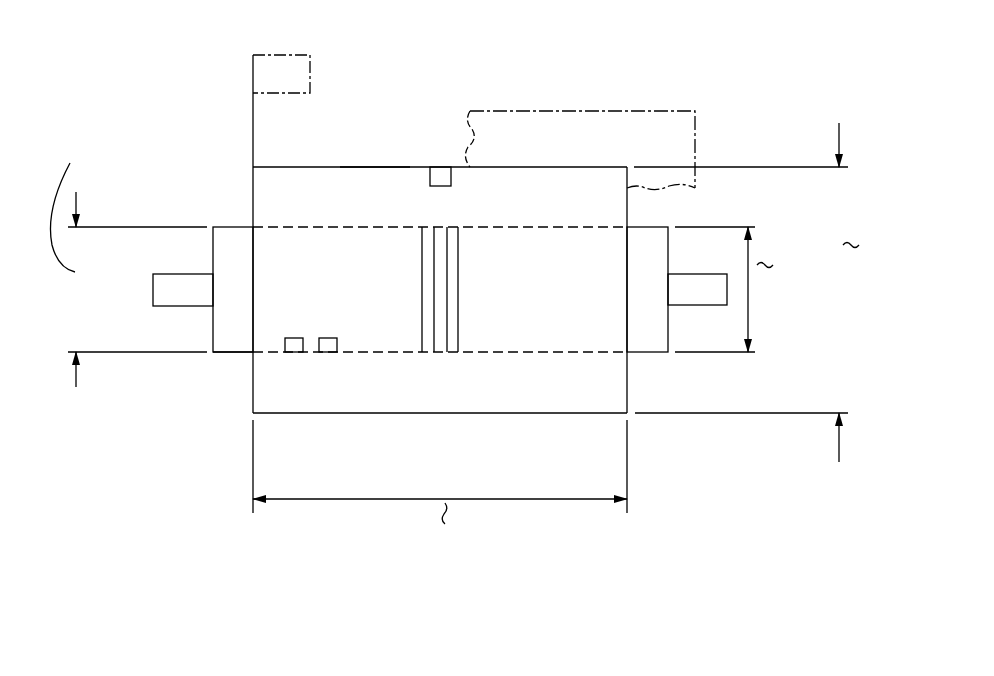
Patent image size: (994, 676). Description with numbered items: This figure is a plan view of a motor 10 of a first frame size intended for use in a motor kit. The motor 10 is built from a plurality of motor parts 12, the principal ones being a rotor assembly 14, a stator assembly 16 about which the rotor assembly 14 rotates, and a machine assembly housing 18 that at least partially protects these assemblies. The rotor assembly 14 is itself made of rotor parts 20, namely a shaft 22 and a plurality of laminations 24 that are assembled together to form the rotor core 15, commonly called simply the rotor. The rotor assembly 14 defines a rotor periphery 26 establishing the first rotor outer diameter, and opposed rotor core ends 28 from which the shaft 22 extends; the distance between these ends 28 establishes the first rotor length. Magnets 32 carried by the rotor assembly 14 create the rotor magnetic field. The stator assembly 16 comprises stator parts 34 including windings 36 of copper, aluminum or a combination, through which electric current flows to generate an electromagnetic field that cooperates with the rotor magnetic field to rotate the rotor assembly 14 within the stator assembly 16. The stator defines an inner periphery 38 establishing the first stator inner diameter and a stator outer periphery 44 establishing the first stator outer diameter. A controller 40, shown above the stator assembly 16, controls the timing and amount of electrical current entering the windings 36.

The motor 10 is at (180, 90).
The motor parts 12 is at (218, 163).
The rotor assembly 14 is at (205, 355).
The rotor core 15 is at (232, 352).
The stator assembly 16 is at (301, 160).
The machine assembly housing 18 is at (580, 108).
The rotor parts 20 is at (201, 340).
The shaft 22 is at (158, 275).
The laminations 24 is at (440, 352).
The rotor periphery 26 is at (307, 227).
The rotor core ends 28 is at (213, 242).
The magnets 32 is at (296, 352).
The stator parts 34 is at (353, 163).
The windings 36 is at (438, 167).
The inner periphery 38 is at (333, 229).
The controller 40 is at (278, 55).
The stator outer periphery 44 is at (585, 413).